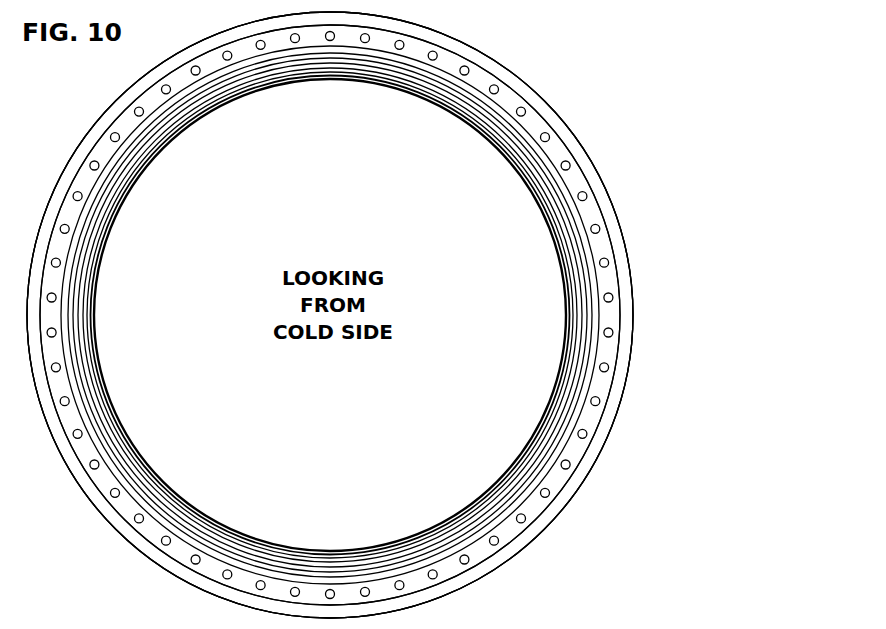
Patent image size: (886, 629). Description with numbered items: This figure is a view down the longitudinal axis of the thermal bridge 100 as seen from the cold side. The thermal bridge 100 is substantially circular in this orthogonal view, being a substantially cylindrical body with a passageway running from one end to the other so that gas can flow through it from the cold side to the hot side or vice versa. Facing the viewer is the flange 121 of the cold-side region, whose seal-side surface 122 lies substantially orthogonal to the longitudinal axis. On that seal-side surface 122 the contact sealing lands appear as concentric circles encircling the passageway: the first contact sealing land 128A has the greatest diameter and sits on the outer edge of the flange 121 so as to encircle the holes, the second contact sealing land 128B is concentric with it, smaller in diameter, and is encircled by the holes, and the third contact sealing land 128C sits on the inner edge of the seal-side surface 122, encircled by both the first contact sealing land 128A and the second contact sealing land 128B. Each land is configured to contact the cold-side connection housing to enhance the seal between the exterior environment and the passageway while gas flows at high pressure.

The thermal bridge 100 is at (642, 33).
The flange 121 is at (630, 271).
The seal-side surface 122 is at (578, 183).
The first contact sealing land 128A is at (618, 400).
The second contact sealing land 128B is at (583, 436).
The third contact sealing land 128C is at (534, 467).